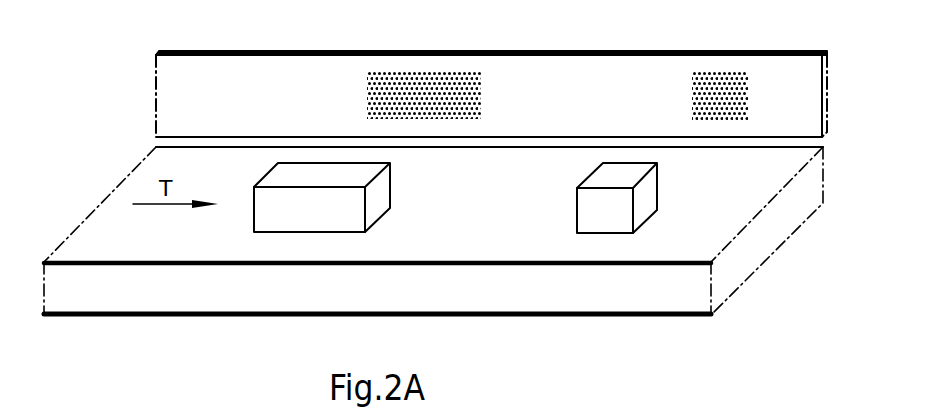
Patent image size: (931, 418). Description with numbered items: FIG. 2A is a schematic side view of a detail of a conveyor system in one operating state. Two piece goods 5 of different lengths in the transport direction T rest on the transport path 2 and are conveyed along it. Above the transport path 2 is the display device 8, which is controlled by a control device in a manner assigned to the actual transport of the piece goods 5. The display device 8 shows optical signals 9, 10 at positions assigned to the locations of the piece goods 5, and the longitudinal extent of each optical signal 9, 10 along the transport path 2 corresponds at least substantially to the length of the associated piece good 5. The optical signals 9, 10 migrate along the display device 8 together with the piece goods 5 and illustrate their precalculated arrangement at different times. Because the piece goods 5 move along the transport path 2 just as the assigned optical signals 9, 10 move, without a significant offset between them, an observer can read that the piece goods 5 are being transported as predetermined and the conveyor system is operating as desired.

The transport path 2 is at (505, 216).
The piece goods 5 is at (383, 192).
The display device 8 is at (232, 51).
The optical signal 9 is at (345, 96).
The optical signal 10 is at (670, 97).